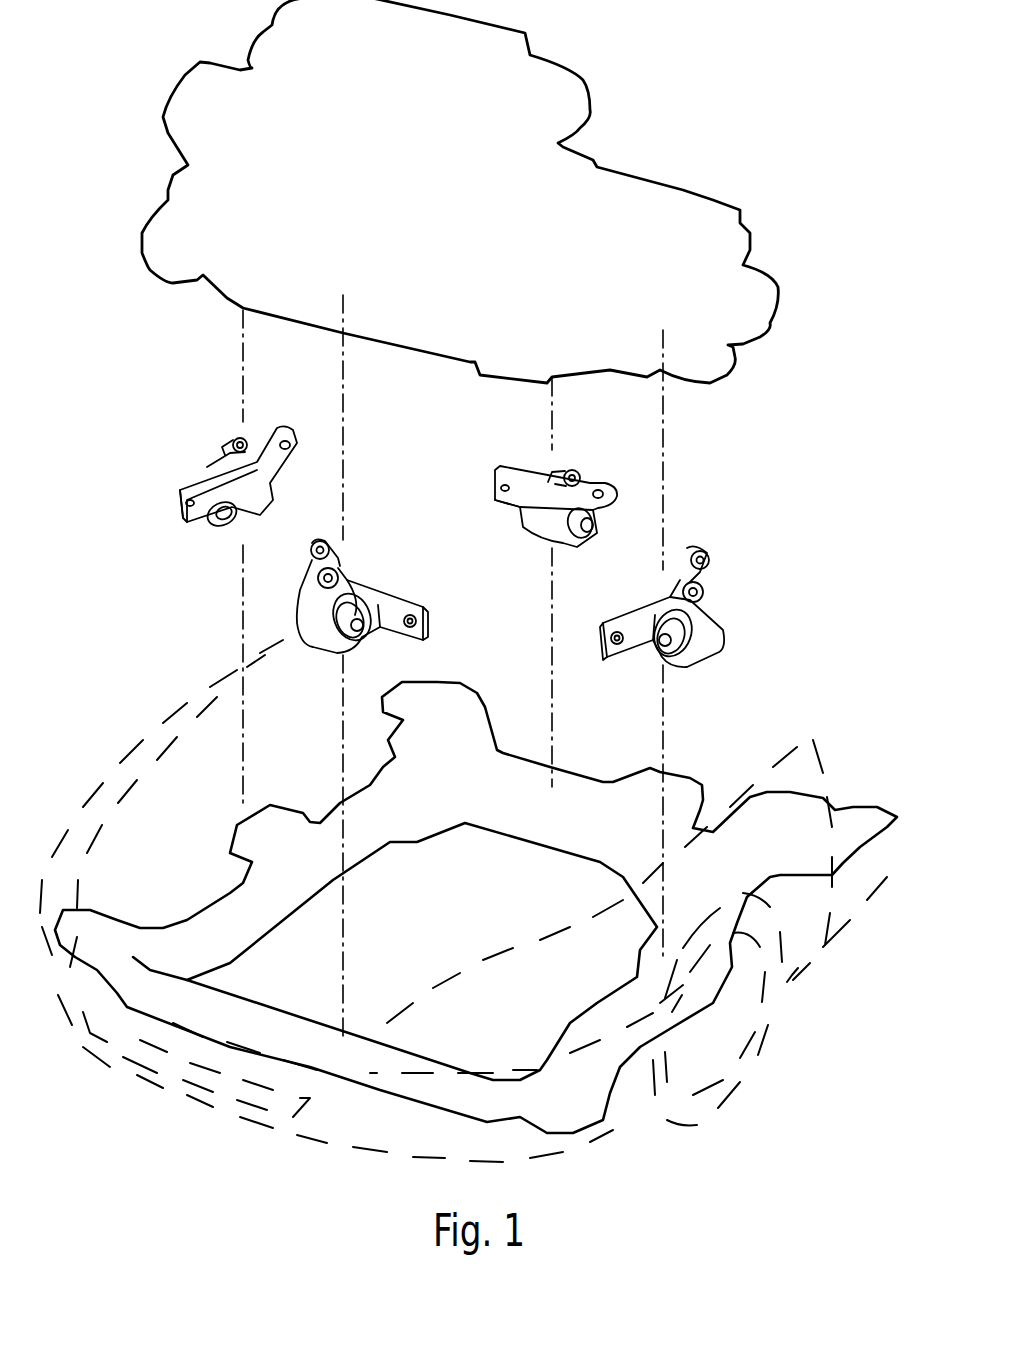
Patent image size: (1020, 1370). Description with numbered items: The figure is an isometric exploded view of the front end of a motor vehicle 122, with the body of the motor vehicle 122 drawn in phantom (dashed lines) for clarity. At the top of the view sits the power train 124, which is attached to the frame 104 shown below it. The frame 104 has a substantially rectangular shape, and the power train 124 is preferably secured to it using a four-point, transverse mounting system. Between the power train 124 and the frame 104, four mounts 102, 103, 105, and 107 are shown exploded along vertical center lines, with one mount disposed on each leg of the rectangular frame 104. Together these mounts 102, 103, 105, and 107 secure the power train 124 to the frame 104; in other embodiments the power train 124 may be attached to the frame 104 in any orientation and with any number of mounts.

The mount 102 is at (210, 465).
The mount 103 is at (377, 580).
The frame 104 is at (768, 807).
The mount 105 is at (730, 610).
The mount 107 is at (595, 480).
The motor vehicle 122 is at (592, 1140).
The power train 124 is at (740, 308).